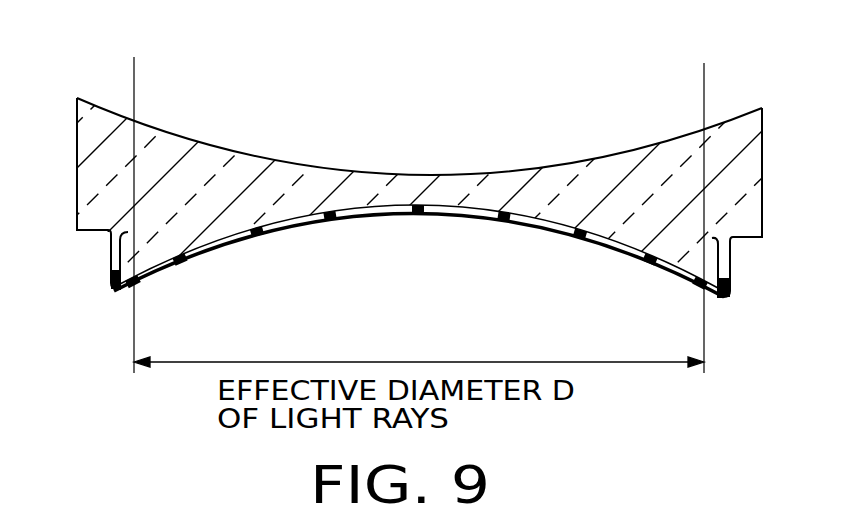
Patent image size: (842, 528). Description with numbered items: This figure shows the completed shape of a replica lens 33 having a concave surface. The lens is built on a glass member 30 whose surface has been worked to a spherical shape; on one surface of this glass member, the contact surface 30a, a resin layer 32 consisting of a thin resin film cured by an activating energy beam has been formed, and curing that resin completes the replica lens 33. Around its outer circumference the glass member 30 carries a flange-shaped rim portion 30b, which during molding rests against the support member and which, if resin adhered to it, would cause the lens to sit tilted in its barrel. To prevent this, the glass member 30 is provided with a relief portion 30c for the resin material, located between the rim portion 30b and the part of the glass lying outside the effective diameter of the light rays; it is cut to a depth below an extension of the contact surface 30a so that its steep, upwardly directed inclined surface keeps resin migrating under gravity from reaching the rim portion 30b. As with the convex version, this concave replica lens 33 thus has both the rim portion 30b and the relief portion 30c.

The glass member 30 is at (735, 143).
The contact surface 30a is at (476, 222).
The rim portion 30b is at (745, 240).
The relief portion 30c is at (727, 297).
The resin layer 32 is at (527, 218).
The replica lens 33 is at (578, 148).